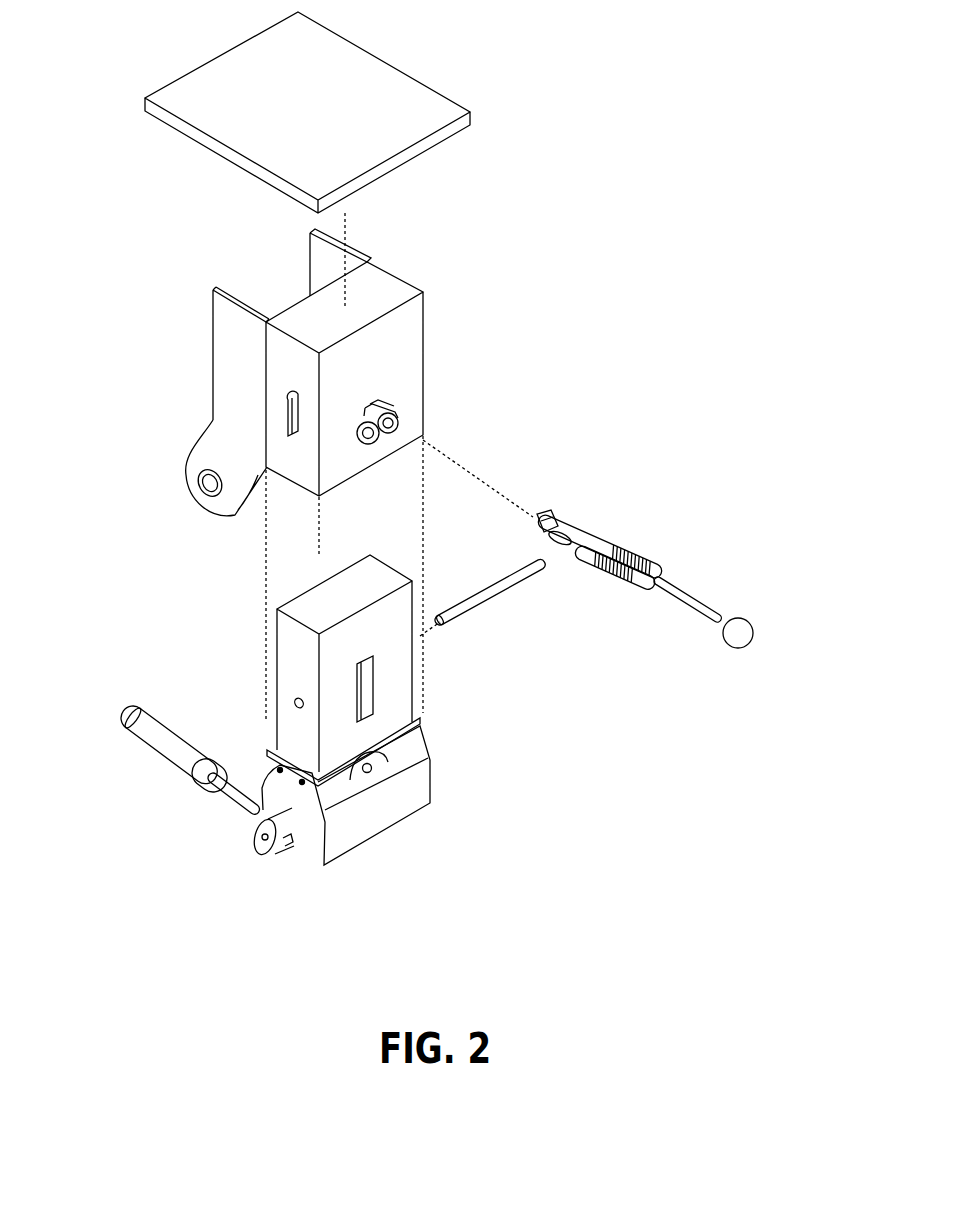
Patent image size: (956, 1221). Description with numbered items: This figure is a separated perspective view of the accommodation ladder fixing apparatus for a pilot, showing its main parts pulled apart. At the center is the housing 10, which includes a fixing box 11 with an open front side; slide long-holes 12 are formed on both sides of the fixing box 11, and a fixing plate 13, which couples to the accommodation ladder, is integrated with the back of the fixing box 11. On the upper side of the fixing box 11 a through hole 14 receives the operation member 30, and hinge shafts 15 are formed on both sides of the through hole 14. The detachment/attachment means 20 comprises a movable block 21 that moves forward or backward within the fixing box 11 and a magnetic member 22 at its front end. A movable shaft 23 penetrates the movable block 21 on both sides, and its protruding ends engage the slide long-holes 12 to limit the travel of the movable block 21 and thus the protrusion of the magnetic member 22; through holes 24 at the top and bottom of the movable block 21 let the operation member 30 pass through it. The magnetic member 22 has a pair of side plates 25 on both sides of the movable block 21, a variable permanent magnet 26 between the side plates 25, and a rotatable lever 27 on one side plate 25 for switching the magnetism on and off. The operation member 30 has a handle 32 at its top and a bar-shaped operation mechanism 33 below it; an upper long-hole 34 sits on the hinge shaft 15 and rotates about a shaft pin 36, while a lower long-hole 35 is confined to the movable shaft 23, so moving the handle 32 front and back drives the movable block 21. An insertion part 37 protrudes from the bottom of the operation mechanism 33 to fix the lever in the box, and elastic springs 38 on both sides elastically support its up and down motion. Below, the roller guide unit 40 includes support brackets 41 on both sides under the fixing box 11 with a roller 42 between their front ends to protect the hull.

The housing 10 is at (443, 297).
The fixing box 11 is at (350, 468).
The slide long-holes 12 is at (286, 432).
The fixing plate 13 is at (395, 103).
The through hole 14 is at (383, 404).
The hinge shafts 15 is at (357, 434).
The detachment/attachment means 20 is at (457, 818).
The movable block 21 is at (403, 673).
The magnetic member 22 is at (282, 840).
The movable shaft 23 is at (500, 600).
The through holes 24 is at (370, 703).
The side plates 25 is at (312, 852).
The variable permanent magnet 26 is at (373, 823).
The rotatable lever 27 is at (217, 788).
The operation member 30 is at (690, 533).
The handle 32 is at (700, 610).
The operation mechanism 33 is at (590, 530).
The upper long-hole 34 is at (580, 562).
The lower long-hole 35 is at (552, 537).
The shaft pin 36 is at (614, 538).
The insertion part 37 is at (548, 515).
The elastic springs 38 is at (613, 590).
The roller guide unit 40 is at (173, 298).
The support brackets 41 is at (228, 382).
The roller 42 is at (260, 503).